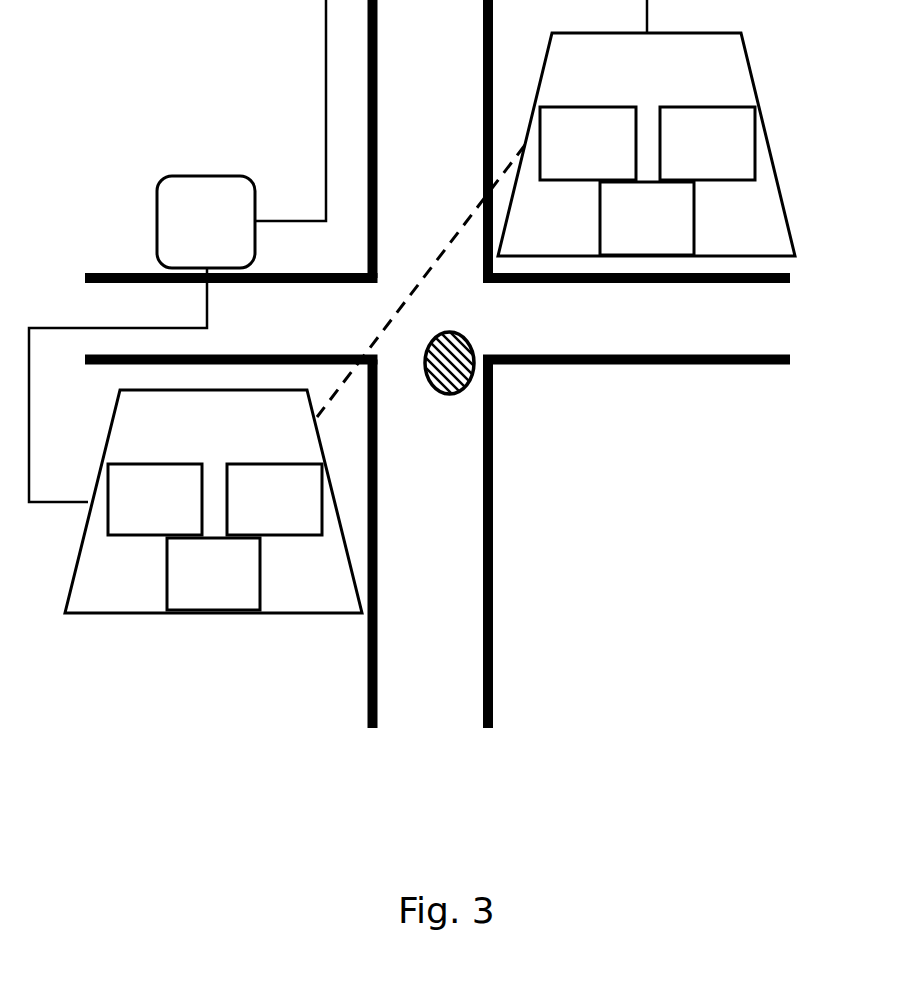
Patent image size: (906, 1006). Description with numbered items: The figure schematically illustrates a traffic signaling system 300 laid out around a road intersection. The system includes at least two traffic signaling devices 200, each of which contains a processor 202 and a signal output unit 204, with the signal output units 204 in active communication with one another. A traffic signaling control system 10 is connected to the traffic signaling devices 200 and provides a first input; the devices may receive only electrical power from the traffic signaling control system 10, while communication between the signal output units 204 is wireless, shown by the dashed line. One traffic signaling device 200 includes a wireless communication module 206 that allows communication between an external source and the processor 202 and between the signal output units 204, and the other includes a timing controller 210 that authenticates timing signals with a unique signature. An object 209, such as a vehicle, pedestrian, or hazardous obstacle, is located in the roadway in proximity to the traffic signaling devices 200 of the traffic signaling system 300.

The traffic signaling control system 10 is at (212, 176).
The traffic signaling device 200 is at (680, 82).
The processor 202 is at (740, 165).
The signal output unit 204 is at (555, 165).
The wireless communication module 206 is at (610, 240).
The timing controller 210 is at (247, 597).
The object 209 is at (455, 394).
The traffic signaling system 300 is at (688, 616).